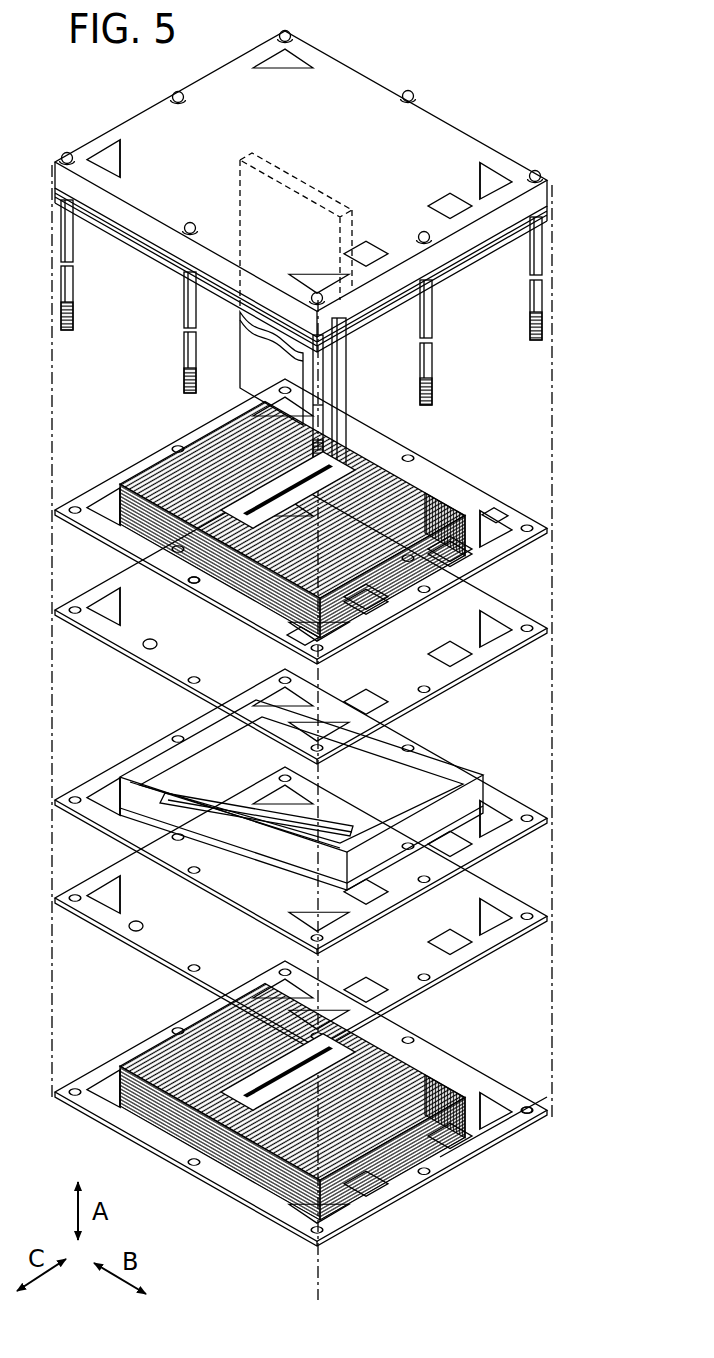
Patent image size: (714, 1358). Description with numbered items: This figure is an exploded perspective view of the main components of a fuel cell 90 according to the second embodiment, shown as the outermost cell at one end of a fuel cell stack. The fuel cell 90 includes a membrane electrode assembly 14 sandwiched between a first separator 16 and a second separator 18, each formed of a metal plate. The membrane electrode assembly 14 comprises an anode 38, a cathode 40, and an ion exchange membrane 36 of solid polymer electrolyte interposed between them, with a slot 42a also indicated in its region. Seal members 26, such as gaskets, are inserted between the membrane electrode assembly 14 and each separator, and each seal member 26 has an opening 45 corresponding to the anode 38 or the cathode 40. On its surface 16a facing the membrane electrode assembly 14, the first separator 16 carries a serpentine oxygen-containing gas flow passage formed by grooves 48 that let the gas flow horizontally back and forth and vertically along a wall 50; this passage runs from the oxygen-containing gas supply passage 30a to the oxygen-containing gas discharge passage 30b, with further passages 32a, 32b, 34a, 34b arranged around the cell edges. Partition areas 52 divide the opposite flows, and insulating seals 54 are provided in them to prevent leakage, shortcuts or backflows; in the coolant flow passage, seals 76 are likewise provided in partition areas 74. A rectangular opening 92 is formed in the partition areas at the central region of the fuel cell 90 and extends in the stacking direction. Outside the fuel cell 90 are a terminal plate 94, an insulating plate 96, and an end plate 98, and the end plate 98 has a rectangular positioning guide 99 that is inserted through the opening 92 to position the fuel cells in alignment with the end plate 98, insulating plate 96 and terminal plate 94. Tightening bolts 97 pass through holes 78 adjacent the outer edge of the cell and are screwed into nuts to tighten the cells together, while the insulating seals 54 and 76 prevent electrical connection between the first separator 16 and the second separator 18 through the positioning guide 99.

The fuel cell 90 is at (112, 96).
The end plate 98 is at (442, 122).
The insulating plate 96 is at (410, 280).
The terminal plate 94 is at (490, 248).
The tightening bolts 97 is at (528, 306).
The positioning guide 99 is at (346, 388).
The opening 92 is at (272, 507).
The oxygen-containing gas supply passage 30a is at (290, 413).
The oxygen-containing gas discharge passage 30b is at (102, 510).
The second separator 18 is at (553, 527).
The seals 76 is at (378, 492).
The partition areas 74 is at (425, 502).
The terminal tab 32a is at (492, 518).
The terminal tab 32b is at (300, 647).
The connection tab 34a is at (466, 560).
The connection tab 34b is at (372, 596).
The holes 78 is at (190, 584).
The seal members 26 is at (553, 625).
The opening 45 is at (143, 650).
The membrane electrode assembly 14 is at (553, 818).
The anode 38 is at (140, 776).
The ion exchange membrane 36 is at (472, 780).
The slot 42a is at (230, 830).
The cathode 40 is at (178, 832).
The first separator 16 is at (553, 1108).
The surface 16a is at (477, 1075).
The insulating seals 54 is at (190, 1022).
The partition areas 52 is at (203, 1110).
The grooves 48 is at (157, 1127).
The wall 50 is at (217, 1167).